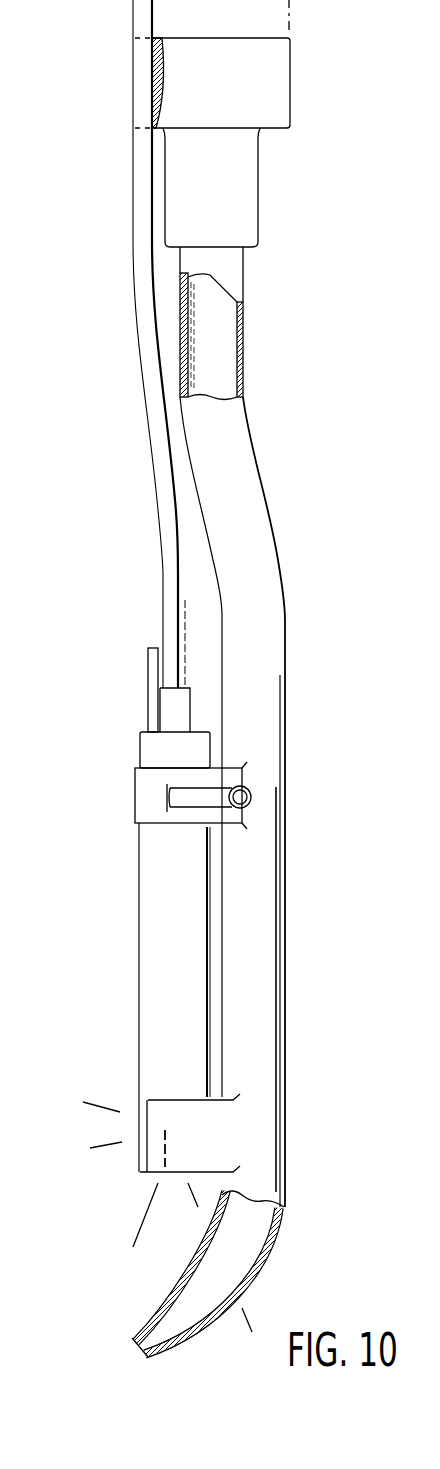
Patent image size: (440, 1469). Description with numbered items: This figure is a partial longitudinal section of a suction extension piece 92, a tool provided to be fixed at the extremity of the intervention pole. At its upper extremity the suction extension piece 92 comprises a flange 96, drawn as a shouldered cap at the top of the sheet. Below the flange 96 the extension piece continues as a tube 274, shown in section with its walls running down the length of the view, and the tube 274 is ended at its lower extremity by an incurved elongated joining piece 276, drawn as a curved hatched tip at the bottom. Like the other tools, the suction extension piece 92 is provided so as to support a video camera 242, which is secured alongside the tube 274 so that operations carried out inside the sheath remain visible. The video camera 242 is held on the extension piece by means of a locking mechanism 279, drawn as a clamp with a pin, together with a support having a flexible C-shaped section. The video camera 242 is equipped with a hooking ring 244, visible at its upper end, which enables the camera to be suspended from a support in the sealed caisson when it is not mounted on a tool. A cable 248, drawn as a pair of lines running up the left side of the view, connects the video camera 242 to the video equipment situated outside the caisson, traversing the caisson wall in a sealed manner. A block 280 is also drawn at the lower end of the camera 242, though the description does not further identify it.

The flange 96 is at (273, 103).
The cable 248 is at (152, 440).
The tube 274 is at (257, 525).
The suction extension piece 92 is at (140, 602).
The hooking ring 244 is at (153, 650).
The locking mechanism 279 is at (175, 835).
The video camera 242 is at (153, 978).
The block 280 is at (170, 1100).
The incurved elongated joining piece 276 is at (175, 1288).